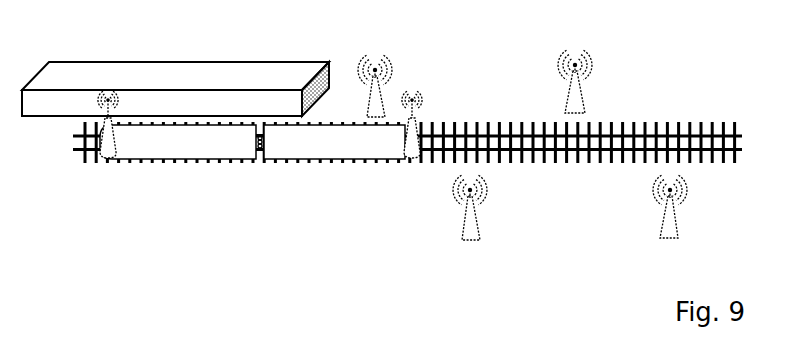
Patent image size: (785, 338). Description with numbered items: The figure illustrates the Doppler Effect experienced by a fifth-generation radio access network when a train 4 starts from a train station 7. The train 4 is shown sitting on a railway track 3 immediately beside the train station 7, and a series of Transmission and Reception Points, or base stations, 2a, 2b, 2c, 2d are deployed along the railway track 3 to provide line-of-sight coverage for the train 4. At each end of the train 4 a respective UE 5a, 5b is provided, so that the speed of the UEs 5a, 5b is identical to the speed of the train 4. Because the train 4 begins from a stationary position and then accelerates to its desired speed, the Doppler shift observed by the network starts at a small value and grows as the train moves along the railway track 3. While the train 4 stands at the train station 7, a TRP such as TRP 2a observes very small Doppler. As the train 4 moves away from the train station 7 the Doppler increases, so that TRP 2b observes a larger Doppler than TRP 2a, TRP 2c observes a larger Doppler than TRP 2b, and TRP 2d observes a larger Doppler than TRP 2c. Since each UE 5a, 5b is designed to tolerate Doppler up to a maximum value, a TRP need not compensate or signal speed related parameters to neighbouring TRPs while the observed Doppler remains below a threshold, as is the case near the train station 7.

The transmission and reception point 2a is at (383, 97).
The transmission and reception point 2b is at (480, 228).
The transmission and reception point 2c is at (582, 95).
The transmission and reception point 2d is at (678, 222).
The railway track 3 is at (678, 127).
The train 4 is at (133, 160).
The UE 5a is at (98, 160).
The UE 5b is at (409, 158).
The train station 7 is at (185, 80).